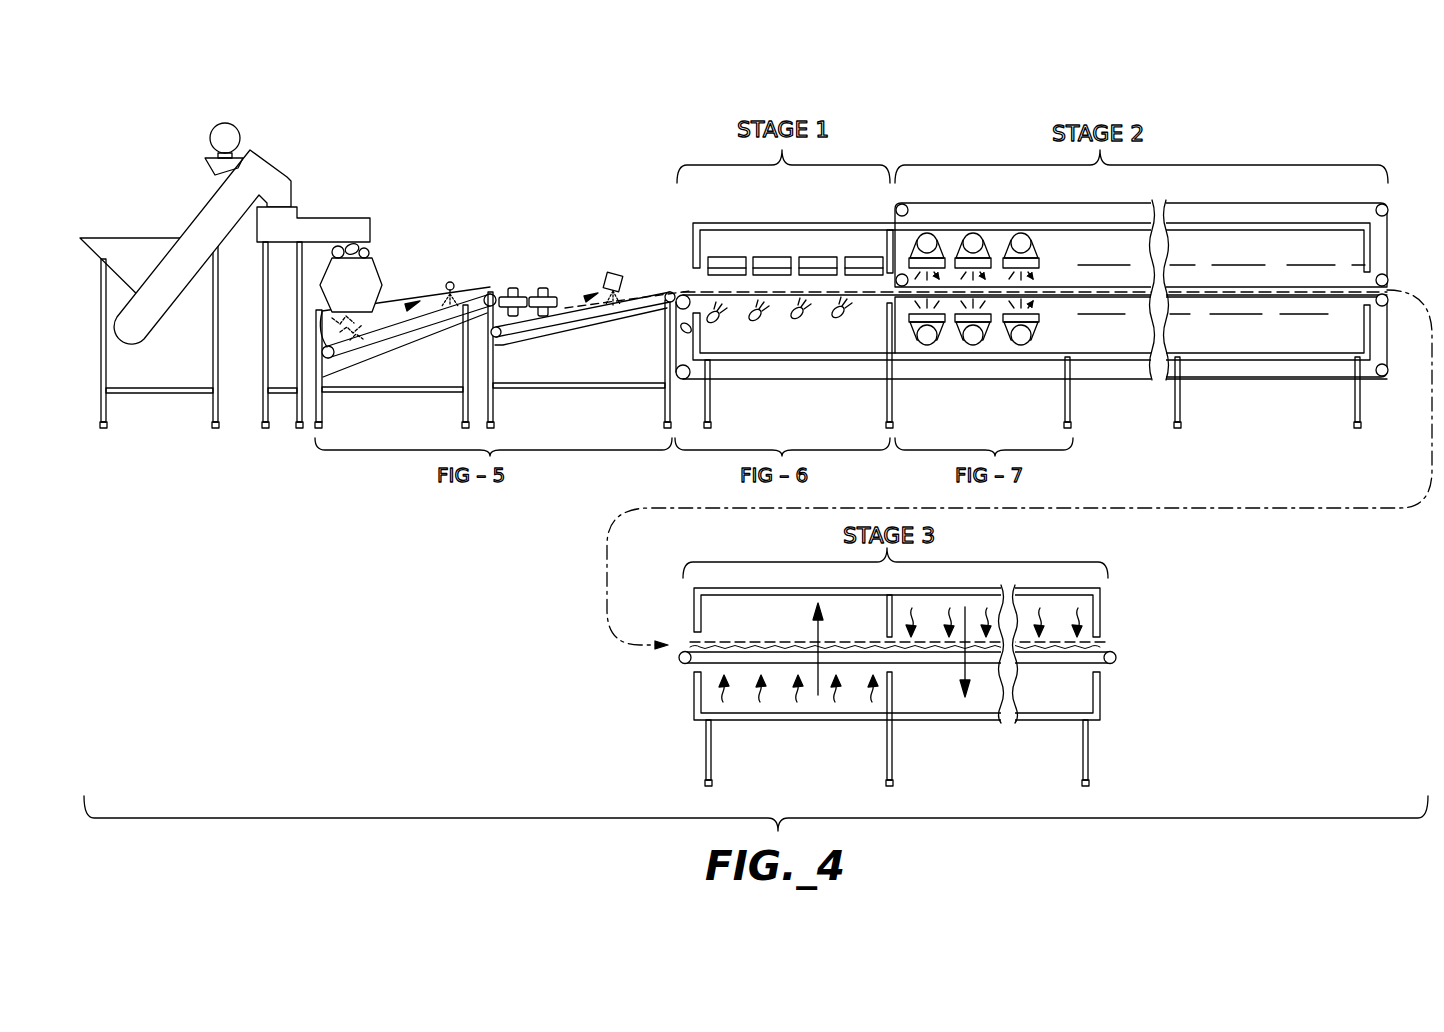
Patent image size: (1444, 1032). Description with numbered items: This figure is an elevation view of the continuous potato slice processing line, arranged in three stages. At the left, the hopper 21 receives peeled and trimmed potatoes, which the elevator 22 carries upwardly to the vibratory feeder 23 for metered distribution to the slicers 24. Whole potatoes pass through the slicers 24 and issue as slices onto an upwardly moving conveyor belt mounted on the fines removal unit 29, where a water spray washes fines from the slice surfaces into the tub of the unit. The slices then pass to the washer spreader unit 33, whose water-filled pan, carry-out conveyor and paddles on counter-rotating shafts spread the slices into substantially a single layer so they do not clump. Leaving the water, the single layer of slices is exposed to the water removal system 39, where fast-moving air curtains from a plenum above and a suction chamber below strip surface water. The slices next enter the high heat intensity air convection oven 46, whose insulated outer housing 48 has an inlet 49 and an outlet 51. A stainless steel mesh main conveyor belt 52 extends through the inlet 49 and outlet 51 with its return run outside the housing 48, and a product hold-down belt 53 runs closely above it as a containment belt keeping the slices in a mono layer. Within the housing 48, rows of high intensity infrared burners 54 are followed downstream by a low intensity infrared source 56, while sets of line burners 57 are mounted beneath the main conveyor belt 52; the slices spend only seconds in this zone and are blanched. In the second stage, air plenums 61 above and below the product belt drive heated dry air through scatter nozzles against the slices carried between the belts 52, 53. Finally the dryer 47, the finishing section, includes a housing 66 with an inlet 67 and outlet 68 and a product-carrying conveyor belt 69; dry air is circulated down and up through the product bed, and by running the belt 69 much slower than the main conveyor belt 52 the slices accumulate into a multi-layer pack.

The hopper 21 is at (147, 237).
The elevator 22 is at (200, 207).
The vibratory feeder 23 is at (305, 207).
The potato slicer 24 is at (381, 262).
The fines removal unit 29 is at (325, 410).
The washer spreader unit 33 is at (493, 405).
The water removal system 39 is at (606, 268).
The high heat intensity air convection oven 46 is at (1010, 212).
The product dryer 47 is at (1040, 597).
The insulated outer housing 48 is at (1027, 357).
The inlet 49 is at (692, 270).
The outlet 51 is at (1372, 278).
The main conveyor belt 52 is at (1330, 378).
The product hold-down belt 53 is at (1272, 203).
The high intensity infrared burner 54 is at (722, 257).
The low intensity infrared source 56 is at (812, 257).
The line burners 57 is at (745, 318).
The air plenums 61 is at (1032, 247).
The dryer housing 66 is at (1092, 609).
The dryer inlet 67 is at (695, 640).
The dryer outlet 68 is at (1112, 652).
The product-carrying conveyor belt 69 is at (683, 664).